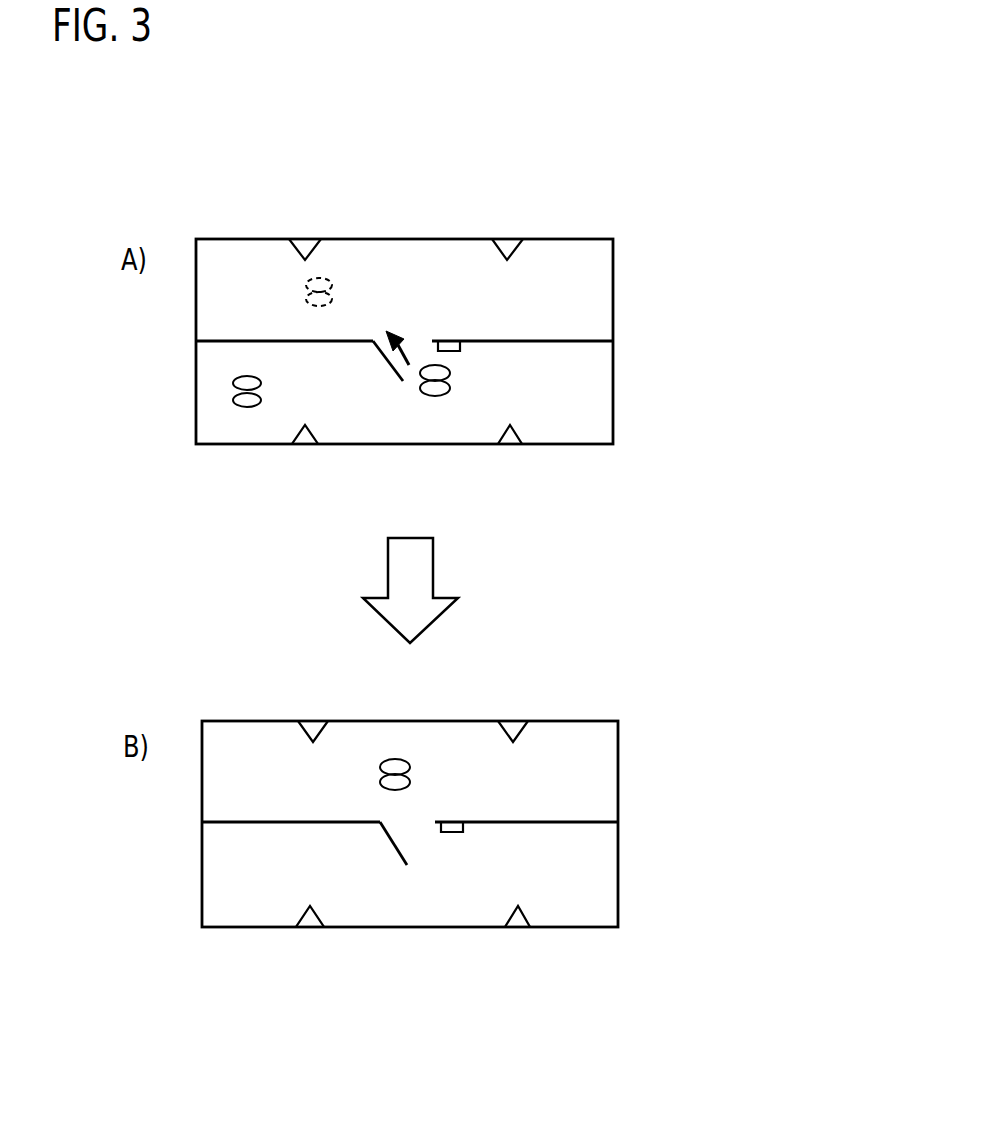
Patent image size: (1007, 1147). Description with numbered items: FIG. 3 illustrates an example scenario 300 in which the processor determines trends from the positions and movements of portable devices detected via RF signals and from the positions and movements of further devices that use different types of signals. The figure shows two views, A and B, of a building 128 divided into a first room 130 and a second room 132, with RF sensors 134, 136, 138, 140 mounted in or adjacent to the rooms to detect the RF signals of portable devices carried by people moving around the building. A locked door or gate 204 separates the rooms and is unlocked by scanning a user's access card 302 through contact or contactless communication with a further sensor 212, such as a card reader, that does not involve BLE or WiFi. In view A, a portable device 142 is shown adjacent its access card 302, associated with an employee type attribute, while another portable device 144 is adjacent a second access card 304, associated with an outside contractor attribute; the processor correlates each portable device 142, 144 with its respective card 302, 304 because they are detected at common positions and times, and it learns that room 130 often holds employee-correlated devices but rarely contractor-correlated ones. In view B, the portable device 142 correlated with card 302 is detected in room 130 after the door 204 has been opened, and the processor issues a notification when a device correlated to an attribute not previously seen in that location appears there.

The example scenario 300 is at (690, 60).
The building 128 is at (566, 239).
The room 130 is at (586, 302).
The room 132 is at (583, 386).
The RF sensor 134 is at (305, 240).
The RF sensor 136 is at (507, 240).
The RF sensor 138 is at (305, 446).
The RF sensor 140 is at (510, 446).
The portable device 142 is at (332, 283).
The access card 302 is at (332, 297).
The portable device 144 is at (262, 380).
The access card 304 is at (262, 398).
The locked door or gate 204 is at (392, 378).
The further sensor 212 is at (436, 337).